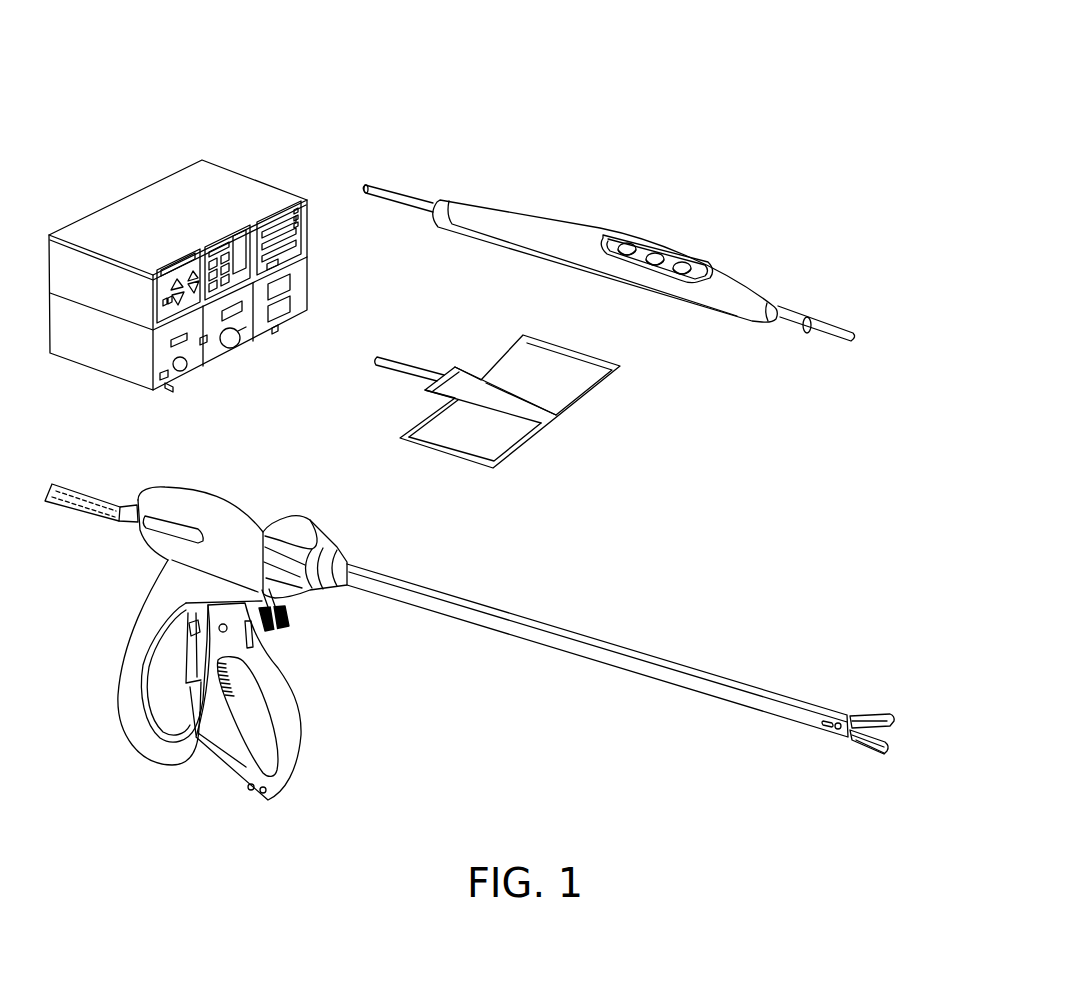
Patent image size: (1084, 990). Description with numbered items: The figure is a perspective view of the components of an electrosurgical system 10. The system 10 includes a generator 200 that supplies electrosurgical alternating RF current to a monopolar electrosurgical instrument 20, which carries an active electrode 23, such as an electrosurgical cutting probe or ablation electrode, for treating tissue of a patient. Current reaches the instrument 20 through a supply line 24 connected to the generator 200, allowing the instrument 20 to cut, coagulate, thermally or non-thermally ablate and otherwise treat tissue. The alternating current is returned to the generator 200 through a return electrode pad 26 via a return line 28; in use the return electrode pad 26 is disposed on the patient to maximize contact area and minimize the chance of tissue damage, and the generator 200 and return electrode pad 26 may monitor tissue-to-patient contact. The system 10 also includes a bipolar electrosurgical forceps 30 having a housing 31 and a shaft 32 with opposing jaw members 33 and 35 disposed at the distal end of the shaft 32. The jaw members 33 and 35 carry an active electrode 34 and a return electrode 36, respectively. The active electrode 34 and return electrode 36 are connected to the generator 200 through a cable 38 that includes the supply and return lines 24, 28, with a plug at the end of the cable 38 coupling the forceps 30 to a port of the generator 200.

The electrosurgical system 10 is at (647, 121).
The generator 200 is at (148, 177).
The monopolar electrosurgical instrument 20 is at (644, 263).
The active electrode 23 is at (820, 320).
The supply line 24 is at (390, 192).
The return electrode pad 26 is at (450, 462).
The return line 28 is at (412, 362).
The bipolar electrosurgical forceps 30 is at (500, 621).
The housing 31 is at (225, 500).
The shaft 32 is at (600, 642).
The jaw member 33 is at (903, 737).
The active electrode 34 is at (893, 727).
The jaw member 35 is at (876, 755).
The return electrode 36 is at (890, 744).
The cable 38 is at (105, 502).